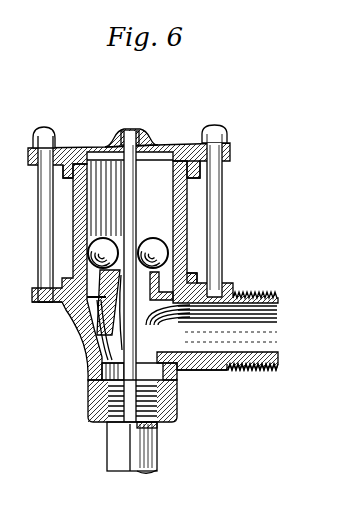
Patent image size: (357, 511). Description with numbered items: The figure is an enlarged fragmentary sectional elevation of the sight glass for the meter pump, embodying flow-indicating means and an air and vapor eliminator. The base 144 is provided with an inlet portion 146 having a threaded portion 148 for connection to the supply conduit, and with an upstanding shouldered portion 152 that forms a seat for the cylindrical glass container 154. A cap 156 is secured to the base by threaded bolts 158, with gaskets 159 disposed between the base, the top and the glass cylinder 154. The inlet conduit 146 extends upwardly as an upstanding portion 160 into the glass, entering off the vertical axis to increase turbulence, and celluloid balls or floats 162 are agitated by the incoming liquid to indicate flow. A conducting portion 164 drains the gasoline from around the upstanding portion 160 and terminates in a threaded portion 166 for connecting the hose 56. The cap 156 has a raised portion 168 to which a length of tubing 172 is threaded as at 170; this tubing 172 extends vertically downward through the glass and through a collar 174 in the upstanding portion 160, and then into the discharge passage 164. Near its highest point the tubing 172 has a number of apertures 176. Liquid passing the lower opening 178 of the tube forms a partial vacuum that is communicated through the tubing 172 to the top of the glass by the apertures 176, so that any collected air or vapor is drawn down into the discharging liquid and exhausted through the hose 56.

The hose 56 is at (126, 451).
The base 144 is at (186, 371).
The inlet portion 146 is at (224, 369).
The threaded portion 148 is at (268, 372).
The upstanding shouldered portion 152 is at (197, 283).
The cylindrical glass container 154 is at (189, 186).
The cap 156 is at (147, 148).
The threaded bolts 158 is at (221, 137).
The gaskets 159 is at (181, 158).
The upstanding portion 160 is at (158, 276).
The celluloid balls or floats 162 is at (151, 250).
The conducting portion 164 is at (89, 352).
The threaded portion 166 is at (106, 412).
The raised portion 168 is at (121, 142).
The threaded connection 170 is at (137, 132).
The tubing 172 is at (86, 191).
The collar 174 is at (153, 335).
The apertures 176 is at (120, 144).
The lower opening 178 is at (152, 424).